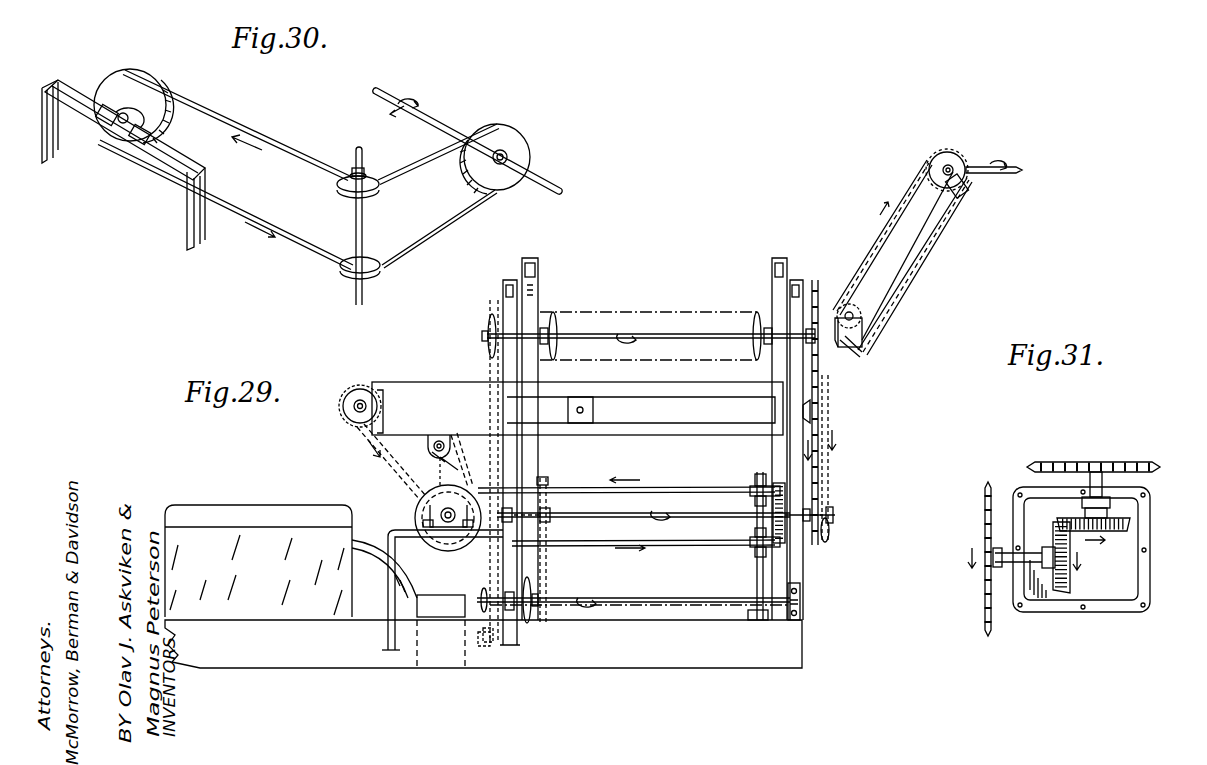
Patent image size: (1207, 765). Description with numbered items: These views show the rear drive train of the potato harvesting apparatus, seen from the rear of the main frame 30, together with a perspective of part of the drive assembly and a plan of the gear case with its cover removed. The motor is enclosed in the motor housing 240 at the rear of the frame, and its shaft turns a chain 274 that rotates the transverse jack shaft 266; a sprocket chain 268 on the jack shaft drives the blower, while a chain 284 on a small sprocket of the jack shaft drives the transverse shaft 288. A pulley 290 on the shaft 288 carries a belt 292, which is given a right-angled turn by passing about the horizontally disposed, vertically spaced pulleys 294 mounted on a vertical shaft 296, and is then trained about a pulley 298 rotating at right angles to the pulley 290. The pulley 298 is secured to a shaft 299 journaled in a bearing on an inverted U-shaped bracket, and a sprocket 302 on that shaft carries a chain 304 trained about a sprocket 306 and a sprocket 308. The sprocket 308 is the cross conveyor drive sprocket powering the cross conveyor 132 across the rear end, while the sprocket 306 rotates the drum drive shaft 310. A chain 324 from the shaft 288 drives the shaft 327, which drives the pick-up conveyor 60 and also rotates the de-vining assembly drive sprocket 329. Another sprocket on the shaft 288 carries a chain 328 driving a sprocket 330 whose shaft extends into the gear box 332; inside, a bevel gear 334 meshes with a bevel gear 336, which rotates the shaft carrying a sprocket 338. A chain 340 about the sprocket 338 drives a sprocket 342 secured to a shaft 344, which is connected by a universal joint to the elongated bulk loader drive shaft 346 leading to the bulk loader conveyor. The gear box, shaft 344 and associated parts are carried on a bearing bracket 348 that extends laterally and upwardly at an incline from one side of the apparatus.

In FIG. 29, the main frame 30 is at (520, 676).
In FIG. 29, the pick-up conveyor 60 is at (548, 262).
In FIG. 29, the cross conveyor 132 is at (398, 376).
In FIG. 29, the motor housing 240 is at (355, 670).
In FIG. 29, the jack shaft 266 is at (690, 599).
In FIG. 29, the sprocket chain 268 is at (535, 578).
In FIG. 29, the chain 274 is at (490, 580).
In FIG. 29, the chain 284 is at (547, 557).
In FIG. 30, the shaft 288 is at (395, 92).
In FIG. 29, the shaft 288 is at (680, 514).
In FIG. 30, the pulley 290 is at (520, 128).
In FIG. 29, the pulley 290 is at (782, 503).
In FIG. 30, the belt 292 is at (303, 251).
In FIG. 29, the belt 292 is at (677, 491).
In FIG. 30, the pulleys 294 is at (350, 193).
In FIG. 29, the pulleys 294 is at (748, 487).
In FIG. 30, the vertical shaft 296 is at (357, 160).
In FIG. 29, the vertical shaft 296 is at (757, 566).
In FIG. 30, the pulley 298 is at (132, 82).
In FIG. 29, the pulley 298 is at (463, 503).
In FIG. 30, the shaft 299 is at (120, 126).
In FIG. 29, the shaft 299 is at (441, 515).
In FIG. 29, the sprocket 302 is at (421, 491).
In FIG. 29, the chain 304 is at (358, 433).
In FIG. 29, the sprocket 306 is at (428, 450).
In FIG. 29, the cross conveyor drive sprocket 308 is at (346, 418).
In FIG. 29, the drum drive shaft 310 is at (432, 454).
In FIG. 29, the chain 324 is at (812, 412).
In FIG. 29, the shaft 327 is at (659, 330).
In FIG. 29, the chain 328 is at (828, 461).
In FIG. 29, the de-vining assembly drive sprocket 329 is at (487, 320).
In FIG. 30, the sprocket 330 is at (190, 218).
In FIG. 31, the sprocket 330 is at (985, 513).
In FIG. 29, the gear box 332 is at (845, 331).
In FIG. 31, the gear box 332 is at (1019, 623).
In FIG. 31, the bevel gear 334 is at (1062, 596).
In FIG. 31, the bevel gear 336 is at (1128, 527).
In FIG. 29, the sprocket 338 is at (853, 313).
In FIG. 31, the sprocket 338 is at (1150, 470).
In FIG. 29, the chain 340 is at (903, 195).
In FIG. 29, the sprocket 342 is at (946, 152).
In FIG. 29, the shaft 344 is at (961, 184).
In FIG. 29, the bulk loader drive shaft 346 is at (1019, 165).
In FIG. 29, the bearing bracket 348 is at (936, 242).